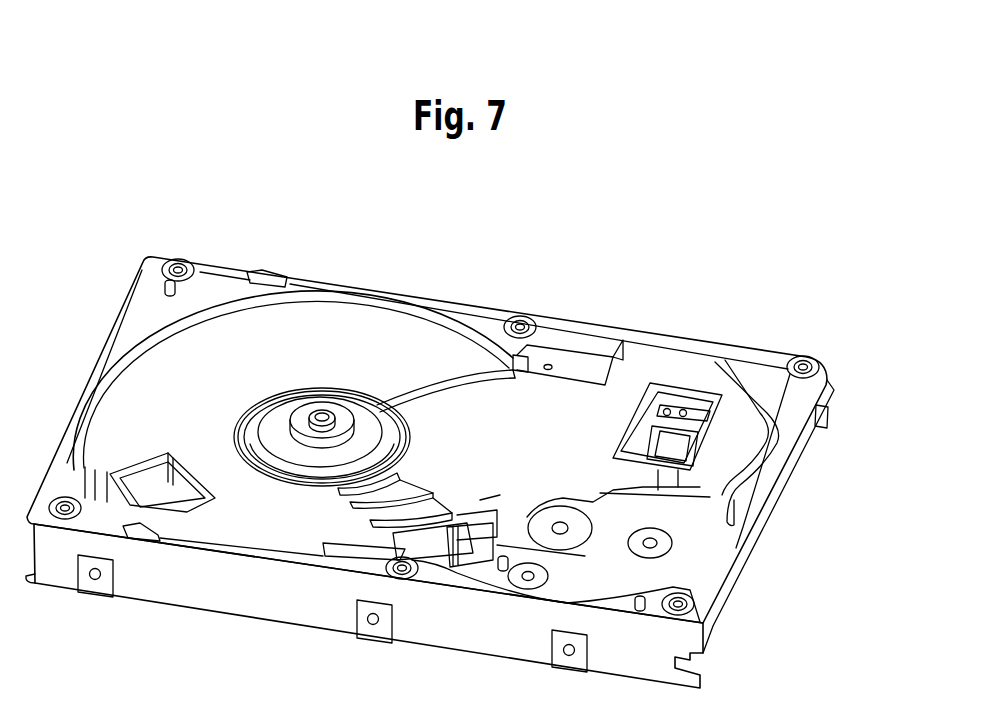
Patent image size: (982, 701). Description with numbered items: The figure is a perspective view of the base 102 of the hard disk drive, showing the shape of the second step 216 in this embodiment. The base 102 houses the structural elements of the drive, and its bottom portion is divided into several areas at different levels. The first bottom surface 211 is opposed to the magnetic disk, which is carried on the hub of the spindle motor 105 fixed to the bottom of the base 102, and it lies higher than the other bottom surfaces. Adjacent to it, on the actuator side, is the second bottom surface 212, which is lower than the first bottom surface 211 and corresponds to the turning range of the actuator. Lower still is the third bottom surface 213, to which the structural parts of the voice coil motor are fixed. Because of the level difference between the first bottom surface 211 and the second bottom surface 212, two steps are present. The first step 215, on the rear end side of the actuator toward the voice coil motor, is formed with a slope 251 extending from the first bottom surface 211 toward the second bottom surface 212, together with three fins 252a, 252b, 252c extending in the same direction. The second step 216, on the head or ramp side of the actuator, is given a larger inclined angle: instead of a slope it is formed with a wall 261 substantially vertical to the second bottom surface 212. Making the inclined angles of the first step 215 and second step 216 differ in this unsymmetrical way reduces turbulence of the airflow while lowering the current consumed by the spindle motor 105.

The base 102 is at (828, 388).
The spindle motor 105 is at (350, 403).
The first bottom surface 211 is at (300, 337).
The second bottom surface 212 is at (627, 390).
The third bottom surface 213 is at (670, 567).
The first step 215 is at (497, 481).
The second step 216 is at (483, 392).
The slope 251 is at (414, 495).
The fin 252a is at (413, 470).
The fin 252b is at (438, 495).
The fin 252c is at (458, 514).
The wall 261 is at (473, 377).